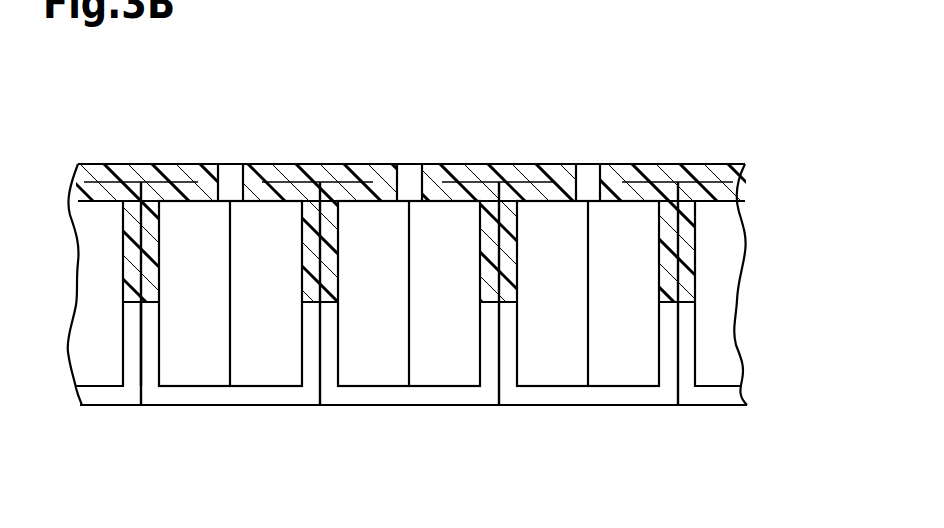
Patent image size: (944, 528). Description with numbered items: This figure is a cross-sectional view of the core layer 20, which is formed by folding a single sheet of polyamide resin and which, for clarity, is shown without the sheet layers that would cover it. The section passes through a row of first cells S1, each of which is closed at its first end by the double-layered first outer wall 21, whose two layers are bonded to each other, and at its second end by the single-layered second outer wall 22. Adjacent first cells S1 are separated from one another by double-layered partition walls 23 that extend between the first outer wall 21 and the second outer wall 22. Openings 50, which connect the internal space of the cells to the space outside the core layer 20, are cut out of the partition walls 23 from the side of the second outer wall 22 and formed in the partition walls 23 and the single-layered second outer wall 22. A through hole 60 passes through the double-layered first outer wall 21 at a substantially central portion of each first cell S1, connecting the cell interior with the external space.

The core layer 20 is at (808, 163).
The first outer wall 21 is at (730, 177).
The second outer wall 22 is at (733, 393).
The partition wall 23 is at (688, 257).
The opening 50 is at (150, 342).
The through hole 60 is at (223, 205).
The first cell S1 is at (612, 210).